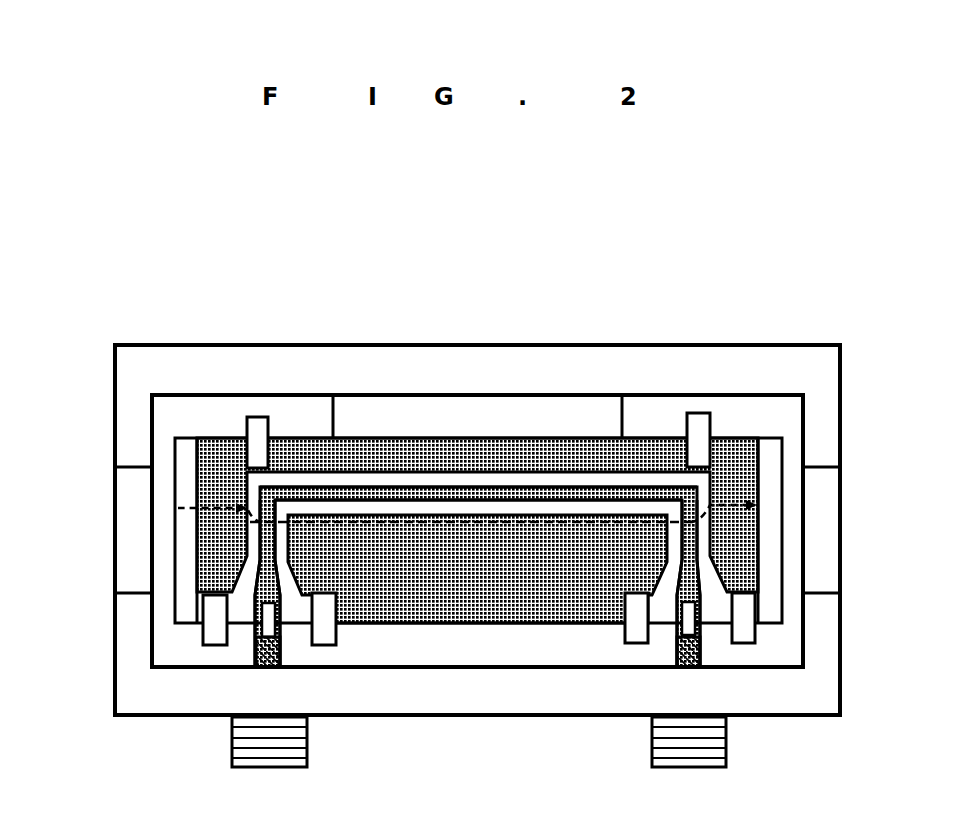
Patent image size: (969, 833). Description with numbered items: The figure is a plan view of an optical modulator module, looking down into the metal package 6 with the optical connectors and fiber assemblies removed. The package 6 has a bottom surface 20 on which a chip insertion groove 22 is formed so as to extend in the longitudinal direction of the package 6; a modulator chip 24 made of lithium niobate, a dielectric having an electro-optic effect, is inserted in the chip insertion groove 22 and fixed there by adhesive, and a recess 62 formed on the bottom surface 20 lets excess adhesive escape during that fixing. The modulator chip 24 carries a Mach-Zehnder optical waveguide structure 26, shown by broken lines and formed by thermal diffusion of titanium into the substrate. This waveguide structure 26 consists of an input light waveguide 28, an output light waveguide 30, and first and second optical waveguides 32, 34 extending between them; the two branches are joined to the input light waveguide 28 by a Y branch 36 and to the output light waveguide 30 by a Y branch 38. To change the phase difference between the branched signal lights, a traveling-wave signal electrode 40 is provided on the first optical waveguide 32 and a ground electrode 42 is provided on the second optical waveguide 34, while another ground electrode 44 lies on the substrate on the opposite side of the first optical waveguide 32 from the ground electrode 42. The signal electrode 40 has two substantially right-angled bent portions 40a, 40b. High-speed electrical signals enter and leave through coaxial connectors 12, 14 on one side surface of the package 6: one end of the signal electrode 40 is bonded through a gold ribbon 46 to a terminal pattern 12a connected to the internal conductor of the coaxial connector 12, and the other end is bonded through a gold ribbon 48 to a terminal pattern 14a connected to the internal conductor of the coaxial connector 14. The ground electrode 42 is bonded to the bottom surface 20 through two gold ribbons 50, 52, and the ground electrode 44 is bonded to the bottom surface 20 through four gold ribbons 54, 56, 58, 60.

The metal package 6 is at (812, 345).
The coaxial connector 12 is at (272, 767).
The terminal pattern 12a is at (287, 655).
The coaxial connector 14 is at (690, 767).
The terminal pattern 14a is at (703, 650).
The bottom surface 20 is at (780, 402).
The chip insertion groove 22 is at (748, 445).
The modulator chip 24 is at (785, 538).
The Mach-Zehnder optical waveguide structure 26 is at (548, 490).
The input light waveguide 28 is at (198, 508).
The output light waveguide 30 is at (760, 500).
The first optical waveguide 32 is at (521, 495).
The second optical waveguide 34 is at (483, 522).
The Y branch 36 is at (228, 517).
The Y branch 38 is at (727, 512).
The signal electrode 40 is at (421, 487).
The bent portion 40a is at (264, 487).
The bent portion 40b is at (673, 487).
The ground electrode 42 is at (432, 620).
The ground electrode 44 is at (378, 447).
The gold ribbon 46 is at (252, 637).
The gold ribbon 48 is at (673, 633).
The gold ribbon 50 is at (327, 640).
The gold ribbon 52 is at (630, 640).
The gold ribbon 54 is at (210, 637).
The gold ribbon 56 is at (745, 640).
The gold ribbon 58 is at (257, 417).
The gold ribbon 60 is at (700, 417).
The recess 62 is at (462, 405).